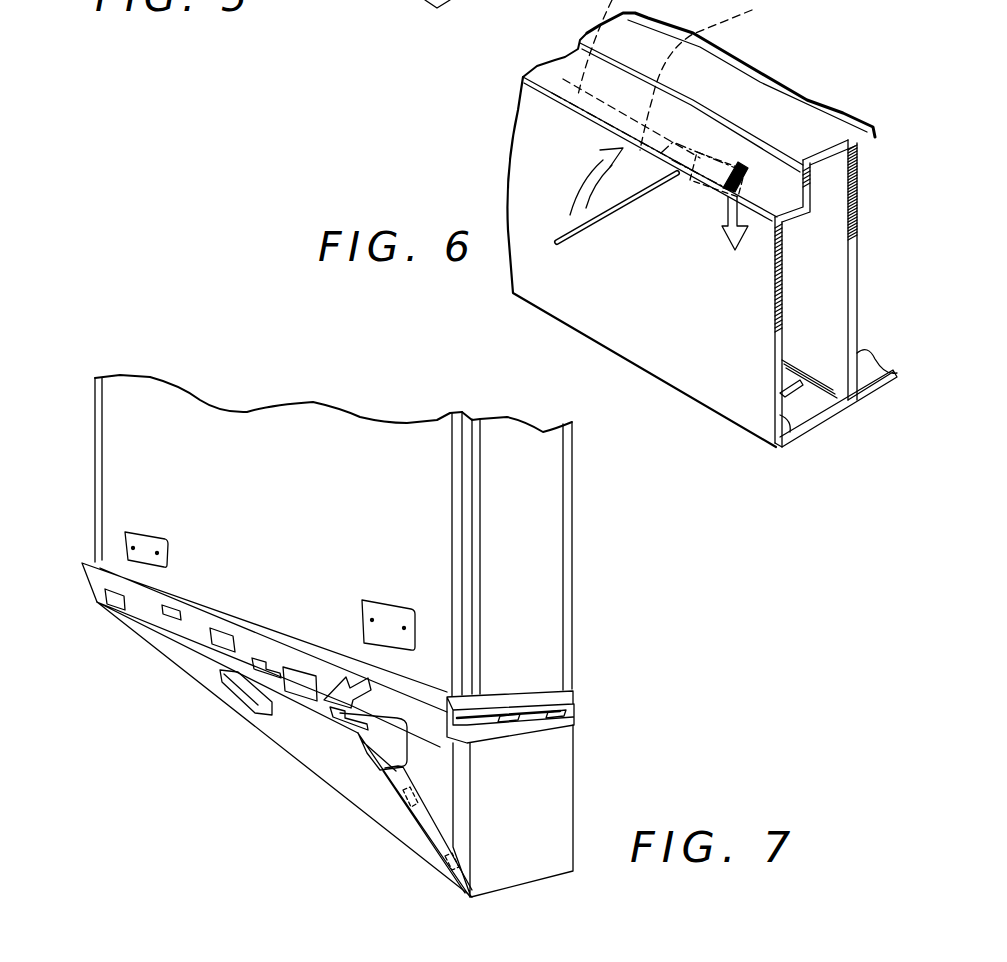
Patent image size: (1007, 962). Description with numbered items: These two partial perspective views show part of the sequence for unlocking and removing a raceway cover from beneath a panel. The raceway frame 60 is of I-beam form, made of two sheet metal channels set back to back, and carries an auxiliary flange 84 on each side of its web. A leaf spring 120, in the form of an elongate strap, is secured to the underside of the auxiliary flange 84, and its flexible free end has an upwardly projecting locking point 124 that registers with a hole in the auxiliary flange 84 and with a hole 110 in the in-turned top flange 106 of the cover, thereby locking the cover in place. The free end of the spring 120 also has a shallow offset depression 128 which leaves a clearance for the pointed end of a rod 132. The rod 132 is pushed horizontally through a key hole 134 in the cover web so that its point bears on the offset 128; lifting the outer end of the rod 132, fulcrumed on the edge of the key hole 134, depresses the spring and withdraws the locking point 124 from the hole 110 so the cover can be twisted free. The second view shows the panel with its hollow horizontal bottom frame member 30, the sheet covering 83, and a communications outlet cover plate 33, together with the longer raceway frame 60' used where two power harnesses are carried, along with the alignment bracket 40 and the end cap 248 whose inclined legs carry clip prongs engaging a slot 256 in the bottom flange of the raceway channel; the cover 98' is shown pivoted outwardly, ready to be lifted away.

In FIG. 6, the in-turned top flange 106 is at (544, 62).
In FIG. 6, the leaf spring 120 is at (722, 75).
In FIG. 6, the locking point 124 is at (749, 164).
In FIG. 6, the offset depression 128 is at (683, 183).
In FIG. 6, the rod 132 is at (562, 245).
In FIG. 6, the auxiliary flange 84 is at (790, 220).
In FIG. 6, the raceway frame 60 is at (717, 223).
In FIG. 6, the slot 256 is at (797, 391).
In FIG. 7, the communications outlet cover plate 33 is at (137, 537).
In FIG. 7, the sheet covering 83 is at (278, 468).
In FIG. 7, the horizontal bottom frame member 30 is at (512, 554).
In FIG. 7, the hole 110 is at (287, 700).
In FIG. 7, the sill rail 98' is at (250, 637).
In FIG. 7, the raceway frame 60' is at (281, 743).
In FIG. 7, the key hole 134 is at (273, 693).
In FIG. 7, the alignment bracket 40 is at (574, 692).
In FIG. 7, the end cap 248 is at (559, 777).